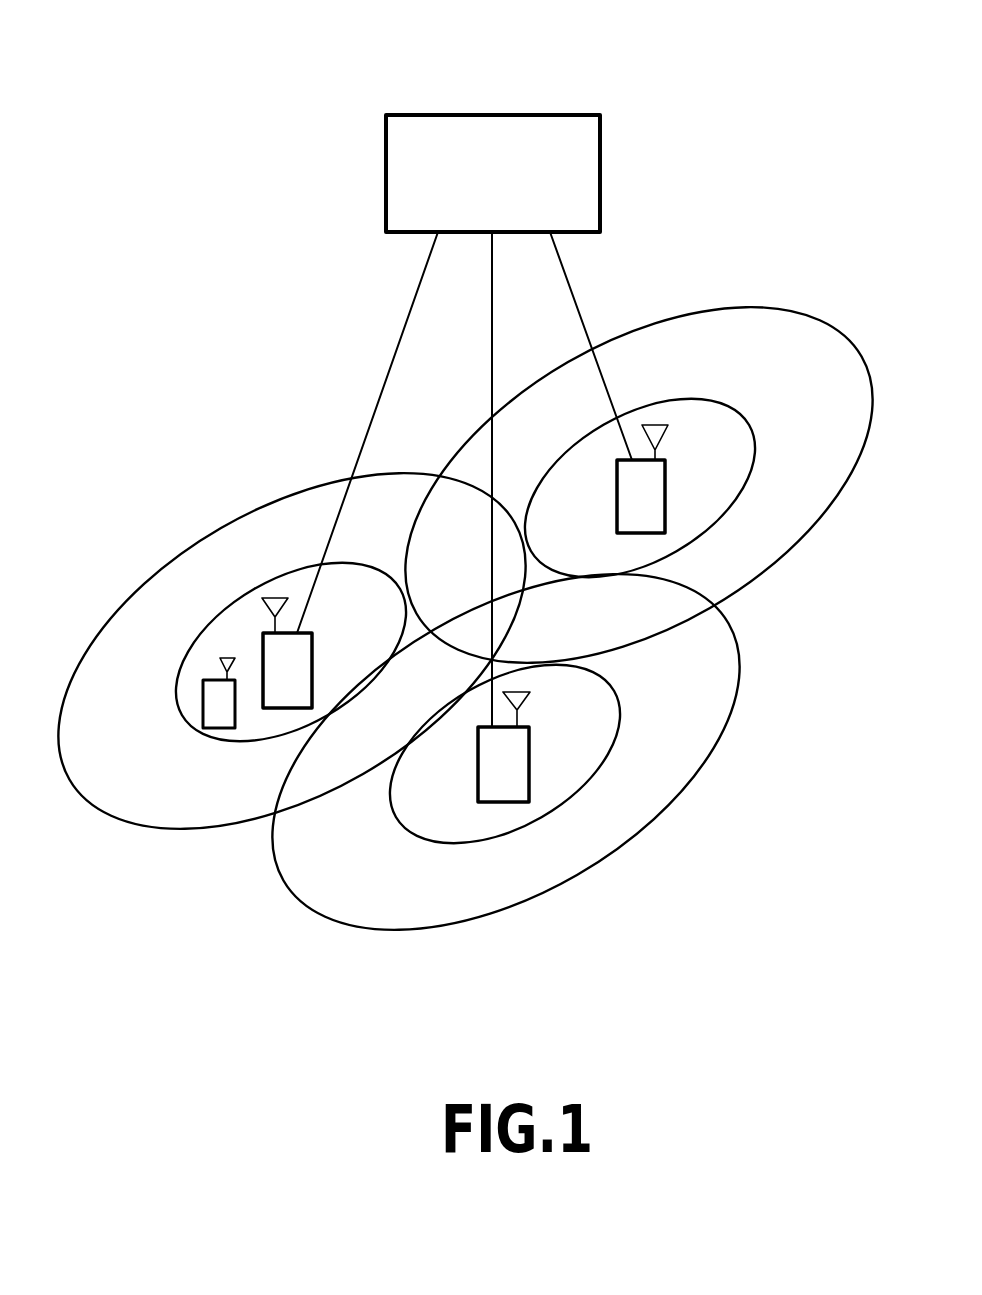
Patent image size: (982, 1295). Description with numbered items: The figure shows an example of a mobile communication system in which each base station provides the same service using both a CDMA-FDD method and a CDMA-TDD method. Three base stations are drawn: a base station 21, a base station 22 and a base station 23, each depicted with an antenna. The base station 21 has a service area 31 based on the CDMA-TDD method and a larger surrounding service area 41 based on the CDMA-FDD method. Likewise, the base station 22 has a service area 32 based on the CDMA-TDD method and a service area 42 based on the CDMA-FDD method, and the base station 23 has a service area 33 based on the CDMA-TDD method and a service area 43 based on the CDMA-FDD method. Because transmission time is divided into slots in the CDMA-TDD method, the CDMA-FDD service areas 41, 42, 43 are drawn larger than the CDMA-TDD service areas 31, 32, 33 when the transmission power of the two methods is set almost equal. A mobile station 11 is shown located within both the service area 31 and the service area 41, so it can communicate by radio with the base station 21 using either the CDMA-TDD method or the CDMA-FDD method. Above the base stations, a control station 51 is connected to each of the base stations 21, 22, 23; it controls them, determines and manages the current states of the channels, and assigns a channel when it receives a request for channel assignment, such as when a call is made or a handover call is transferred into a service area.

The mobile station 11 is at (212, 682).
The base station 21 is at (292, 632).
The base station 22 is at (495, 795).
The base station 23 is at (655, 490).
The service area 31 is at (178, 723).
The service area 32 is at (614, 680).
The service area 33 is at (742, 404).
The service area 41 is at (157, 573).
The service area 42 is at (655, 817).
The service area 43 is at (750, 305).
The control station 51 is at (494, 115).